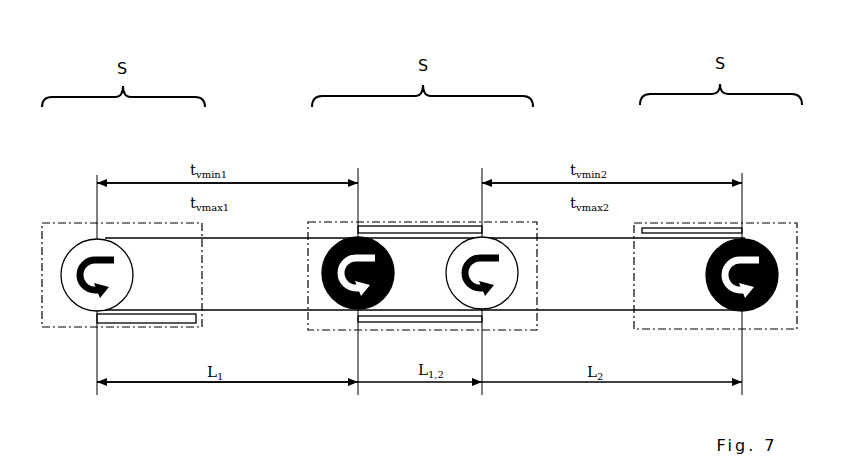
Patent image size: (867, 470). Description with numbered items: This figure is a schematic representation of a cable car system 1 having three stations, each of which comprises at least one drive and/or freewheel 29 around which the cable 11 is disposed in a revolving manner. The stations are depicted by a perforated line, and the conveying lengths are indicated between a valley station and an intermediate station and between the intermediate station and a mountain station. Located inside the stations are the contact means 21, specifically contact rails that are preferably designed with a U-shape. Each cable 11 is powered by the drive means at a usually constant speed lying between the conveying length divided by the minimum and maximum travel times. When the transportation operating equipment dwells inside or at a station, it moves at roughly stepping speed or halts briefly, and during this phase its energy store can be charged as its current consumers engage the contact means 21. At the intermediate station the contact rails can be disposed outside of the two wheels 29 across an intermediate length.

The cable car system 1 is at (227, 48).
The cable 11 is at (228, 310).
The contact means 21 is at (160, 323).
The drive and/or freewheel 29 is at (80, 295).